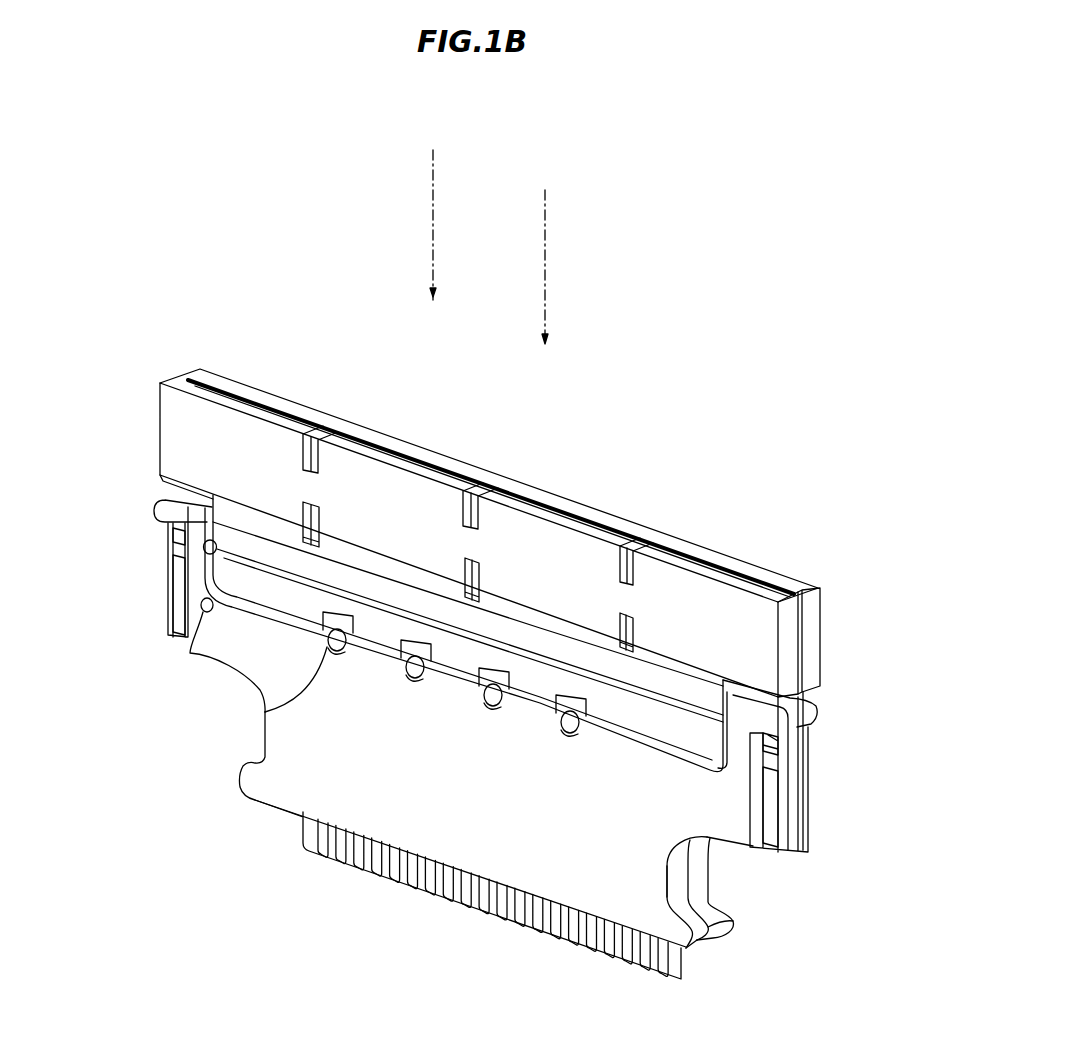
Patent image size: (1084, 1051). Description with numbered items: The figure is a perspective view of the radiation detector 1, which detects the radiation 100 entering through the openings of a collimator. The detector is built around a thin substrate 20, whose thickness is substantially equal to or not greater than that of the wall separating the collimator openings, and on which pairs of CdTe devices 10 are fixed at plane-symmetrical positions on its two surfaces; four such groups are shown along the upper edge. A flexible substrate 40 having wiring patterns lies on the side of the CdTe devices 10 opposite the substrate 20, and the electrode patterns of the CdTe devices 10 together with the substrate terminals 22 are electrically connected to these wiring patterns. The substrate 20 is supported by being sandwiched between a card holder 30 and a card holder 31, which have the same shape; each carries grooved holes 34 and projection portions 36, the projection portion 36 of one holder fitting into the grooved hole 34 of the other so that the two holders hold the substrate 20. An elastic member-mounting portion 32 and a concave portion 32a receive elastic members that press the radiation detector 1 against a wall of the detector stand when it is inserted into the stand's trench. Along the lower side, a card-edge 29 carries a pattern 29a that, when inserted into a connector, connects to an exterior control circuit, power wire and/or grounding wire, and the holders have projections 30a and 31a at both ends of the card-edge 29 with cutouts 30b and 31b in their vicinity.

The radiation 100 is at (545, 263).
The radiation detector 1 is at (580, 338).
The CdTe device 10 is at (235, 385).
The substrate 20 is at (478, 470).
The flexible substrate 40 is at (565, 557).
The card holder 30 is at (288, 785).
The card holder 31 is at (722, 940).
The projection 31a is at (728, 918).
The cutout 31b is at (703, 876).
The projection 30a is at (705, 938).
The cutout 30b is at (672, 883).
The elastic member-mounting portion 32 is at (170, 636).
The concave portion 32a is at (778, 740).
The grooved hole 34 is at (203, 547).
The projection portion 36 is at (201, 606).
The substrate terminal 22 is at (265, 714).
The card-edge 29 is at (355, 875).
The pattern 29a is at (520, 905).